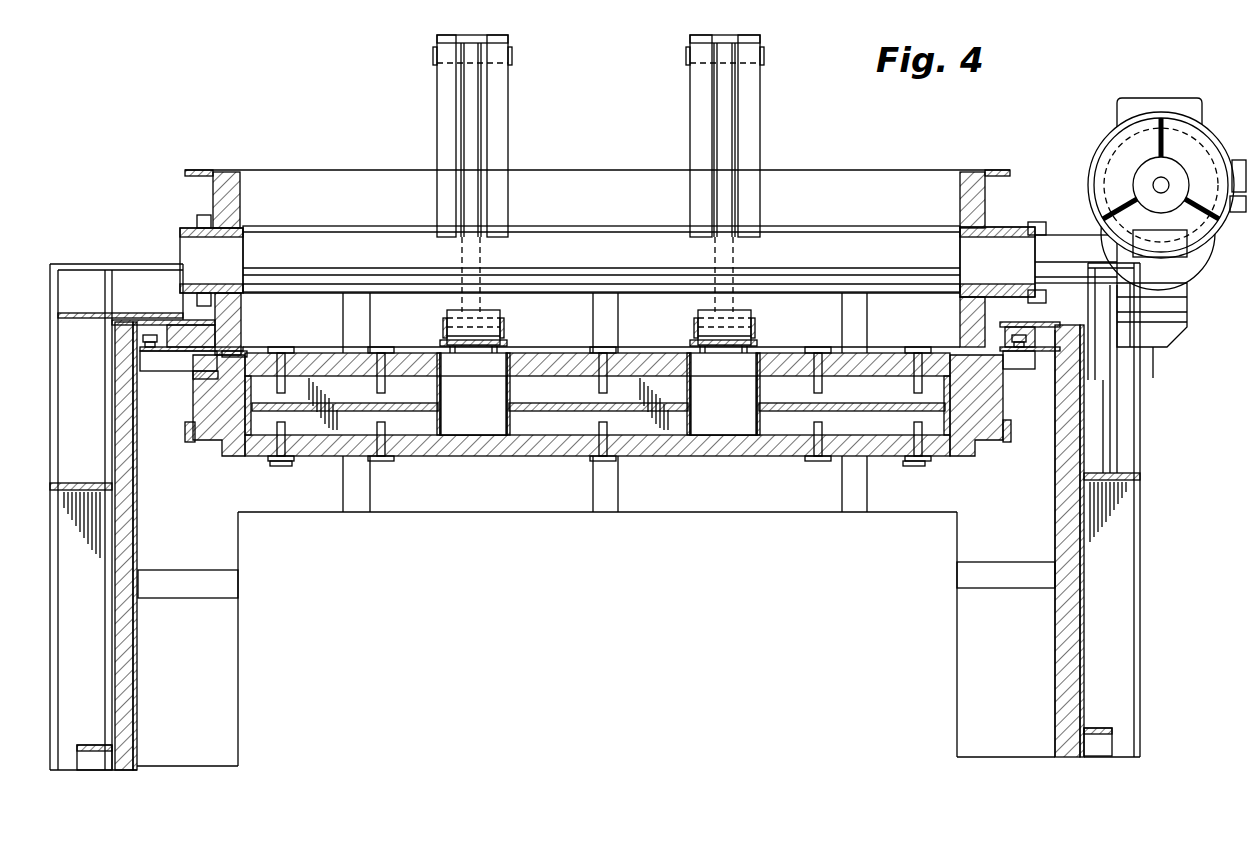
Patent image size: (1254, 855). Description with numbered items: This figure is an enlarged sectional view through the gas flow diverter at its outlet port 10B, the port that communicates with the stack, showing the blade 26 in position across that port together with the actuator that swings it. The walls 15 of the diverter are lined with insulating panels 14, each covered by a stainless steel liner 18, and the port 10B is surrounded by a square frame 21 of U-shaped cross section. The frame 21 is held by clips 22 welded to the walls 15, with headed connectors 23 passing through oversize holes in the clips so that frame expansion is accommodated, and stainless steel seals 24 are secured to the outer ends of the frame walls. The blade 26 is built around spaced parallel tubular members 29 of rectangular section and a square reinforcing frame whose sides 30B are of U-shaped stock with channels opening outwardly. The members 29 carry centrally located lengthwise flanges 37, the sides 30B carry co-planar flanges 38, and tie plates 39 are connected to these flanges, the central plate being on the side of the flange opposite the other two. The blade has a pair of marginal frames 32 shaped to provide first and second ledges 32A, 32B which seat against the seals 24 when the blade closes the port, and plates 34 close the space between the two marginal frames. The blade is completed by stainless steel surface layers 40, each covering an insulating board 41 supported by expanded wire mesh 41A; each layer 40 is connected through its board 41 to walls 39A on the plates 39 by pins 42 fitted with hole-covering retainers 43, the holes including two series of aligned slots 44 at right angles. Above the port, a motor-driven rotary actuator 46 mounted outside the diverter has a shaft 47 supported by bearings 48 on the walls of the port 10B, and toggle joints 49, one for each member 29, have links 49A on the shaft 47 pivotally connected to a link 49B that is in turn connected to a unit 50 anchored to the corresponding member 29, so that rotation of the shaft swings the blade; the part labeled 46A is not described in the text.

The diverter port 10B is at (315, 166).
The panels 14 is at (1062, 630).
The walls 15 is at (1082, 640).
The stainless steel liner 18 is at (1055, 666).
The square frame 21 is at (160, 376).
The clips 22 is at (145, 336).
The headed connectors 23 is at (157, 334).
The stainless steel seals 24 is at (1020, 334).
The blade 26 is at (596, 529).
The tubular members 29 is at (495, 412).
The sides of reinforcing frame 30B is at (260, 462).
The marginal frames 32 is at (576, 418).
The first ledge 32A is at (232, 352).
The second ledge 32B is at (200, 372).
The plates 34 is at (186, 432).
The lengthwise flanges 37 is at (425, 462).
The co-planar flanges 38 is at (278, 466).
The tie plates 39 is at (870, 420).
The walls 39A is at (335, 385).
The surface layers 40 is at (576, 373).
The insulating board 41 is at (530, 372).
The expanded wire mesh 41A is at (640, 395).
The pins 42 is at (806, 370).
The retainers 43 is at (835, 355).
The aligned slots 44 is at (390, 358).
The rotary actuator 46 is at (1098, 118).
The handwheel knob 46A is at (1238, 214).
The shaft 47 is at (820, 228).
The bearings 48 is at (196, 228).
The toggle joints 49 is at (627, 169).
The links 49A is at (460, 100).
The toggle joint link 49B is at (470, 140).
The unit 50 is at (504, 330).